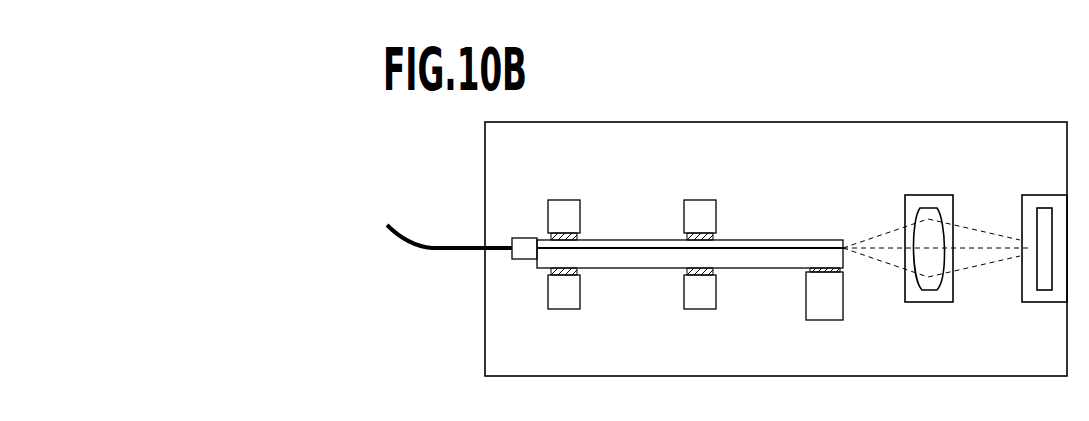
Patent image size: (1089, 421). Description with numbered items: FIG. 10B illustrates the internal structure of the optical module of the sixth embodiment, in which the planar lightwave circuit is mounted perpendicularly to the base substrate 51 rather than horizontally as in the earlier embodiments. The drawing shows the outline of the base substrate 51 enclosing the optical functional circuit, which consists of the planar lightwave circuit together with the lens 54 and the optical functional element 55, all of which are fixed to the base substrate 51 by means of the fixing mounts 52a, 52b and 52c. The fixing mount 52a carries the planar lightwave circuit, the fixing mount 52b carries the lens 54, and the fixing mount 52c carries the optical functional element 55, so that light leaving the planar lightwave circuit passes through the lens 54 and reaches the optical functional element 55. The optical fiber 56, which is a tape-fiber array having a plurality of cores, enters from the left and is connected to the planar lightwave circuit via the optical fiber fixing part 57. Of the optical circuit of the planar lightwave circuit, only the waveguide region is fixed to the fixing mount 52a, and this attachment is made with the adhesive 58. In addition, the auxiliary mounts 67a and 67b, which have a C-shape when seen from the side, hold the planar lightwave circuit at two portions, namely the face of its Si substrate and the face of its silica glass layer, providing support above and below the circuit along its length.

The base substrate 51 is at (1010, 122).
The optical fiber 56 is at (419, 262).
The optical fiber fixing part 57 is at (522, 260).
The adhesive 58 is at (845, 270).
The auxiliary mount 67a is at (562, 300).
The auxiliary mount 67b is at (698, 298).
The fixing mount 52a is at (822, 310).
The fixing mount 52b is at (929, 303).
The lens 54 is at (929, 206).
The fixing mount 52c is at (1042, 303).
The optical functional element 55 is at (1044, 206).